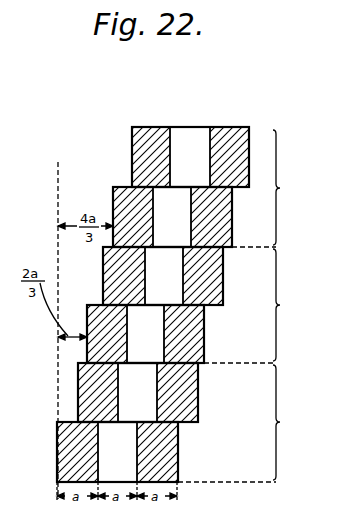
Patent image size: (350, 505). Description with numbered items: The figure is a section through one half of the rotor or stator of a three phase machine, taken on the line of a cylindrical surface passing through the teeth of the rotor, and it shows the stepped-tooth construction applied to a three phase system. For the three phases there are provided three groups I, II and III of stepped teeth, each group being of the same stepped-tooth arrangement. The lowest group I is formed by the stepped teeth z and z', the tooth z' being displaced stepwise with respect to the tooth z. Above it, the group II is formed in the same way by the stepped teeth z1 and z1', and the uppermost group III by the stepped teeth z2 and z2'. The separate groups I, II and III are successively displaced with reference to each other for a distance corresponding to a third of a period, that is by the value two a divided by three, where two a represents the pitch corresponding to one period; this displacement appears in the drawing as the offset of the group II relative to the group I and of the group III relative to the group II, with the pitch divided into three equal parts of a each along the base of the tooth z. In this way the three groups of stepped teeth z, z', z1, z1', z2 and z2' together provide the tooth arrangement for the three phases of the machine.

The stepped tooth z is at (128, 452).
The stepped tooth z' is at (151, 392).
The stepped tooth z1 is at (159, 334).
The stepped tooth z1' is at (177, 276).
The stepped tooth z2 is at (185, 217).
The stepped tooth z2' is at (202, 157).
The group of stepped teeth I is at (298, 438).
The group of stepped teeth II is at (303, 322).
The group of stepped teeth III is at (304, 202).